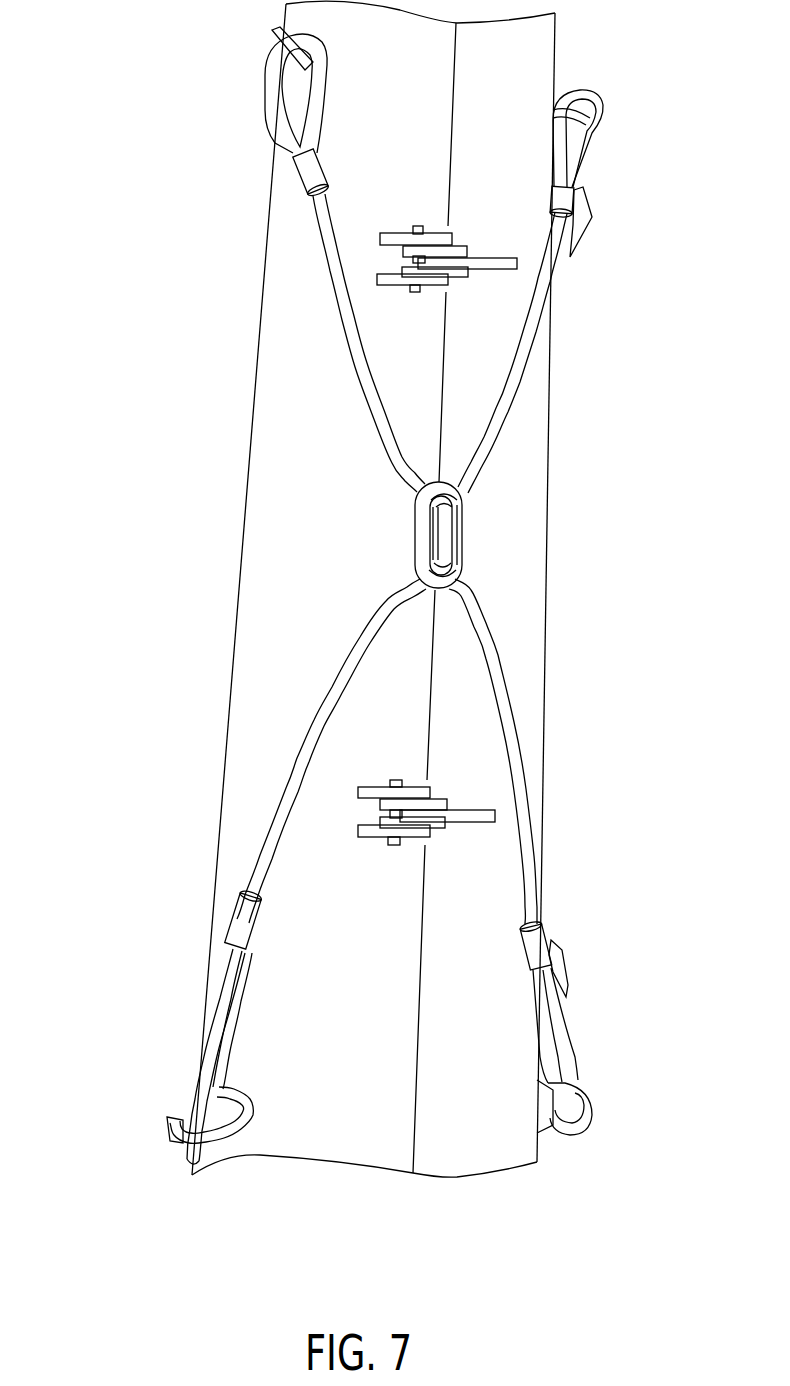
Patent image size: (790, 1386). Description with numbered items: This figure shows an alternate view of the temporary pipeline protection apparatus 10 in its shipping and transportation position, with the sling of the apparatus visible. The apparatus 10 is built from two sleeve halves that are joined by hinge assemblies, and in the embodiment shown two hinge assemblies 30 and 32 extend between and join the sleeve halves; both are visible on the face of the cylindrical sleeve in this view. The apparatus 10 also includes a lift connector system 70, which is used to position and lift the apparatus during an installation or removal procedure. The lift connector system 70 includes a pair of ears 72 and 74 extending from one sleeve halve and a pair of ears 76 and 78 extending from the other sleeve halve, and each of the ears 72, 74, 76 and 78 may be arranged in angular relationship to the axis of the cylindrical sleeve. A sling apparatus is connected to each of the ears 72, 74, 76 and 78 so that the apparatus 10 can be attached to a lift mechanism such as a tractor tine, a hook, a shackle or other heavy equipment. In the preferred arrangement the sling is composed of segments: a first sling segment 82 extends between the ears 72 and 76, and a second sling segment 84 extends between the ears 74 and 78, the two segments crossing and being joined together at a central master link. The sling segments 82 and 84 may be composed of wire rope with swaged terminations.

The temporary pipeline protection apparatus 10 is at (638, 508).
The hinge assembly 30 is at (490, 257).
The hinge assembly 32 is at (460, 810).
The lift connector system 70 is at (110, 182).
The ear 72 is at (277, 37).
The ear 74 is at (207, 1117).
The ear 76 is at (592, 120).
The ear 78 is at (555, 1097).
The first sling segment 82 is at (334, 249).
The second sling segment 84 is at (320, 730).